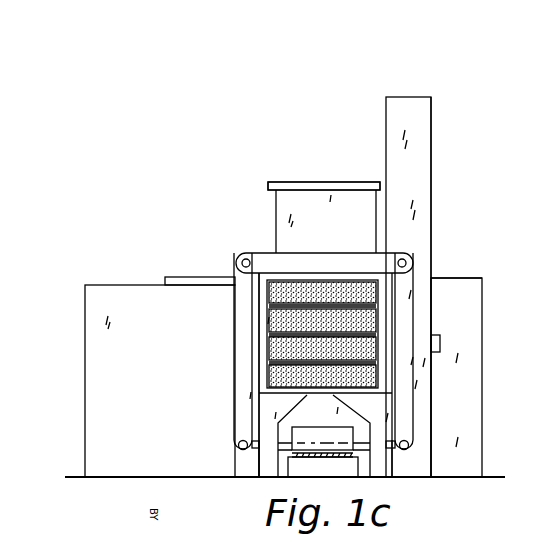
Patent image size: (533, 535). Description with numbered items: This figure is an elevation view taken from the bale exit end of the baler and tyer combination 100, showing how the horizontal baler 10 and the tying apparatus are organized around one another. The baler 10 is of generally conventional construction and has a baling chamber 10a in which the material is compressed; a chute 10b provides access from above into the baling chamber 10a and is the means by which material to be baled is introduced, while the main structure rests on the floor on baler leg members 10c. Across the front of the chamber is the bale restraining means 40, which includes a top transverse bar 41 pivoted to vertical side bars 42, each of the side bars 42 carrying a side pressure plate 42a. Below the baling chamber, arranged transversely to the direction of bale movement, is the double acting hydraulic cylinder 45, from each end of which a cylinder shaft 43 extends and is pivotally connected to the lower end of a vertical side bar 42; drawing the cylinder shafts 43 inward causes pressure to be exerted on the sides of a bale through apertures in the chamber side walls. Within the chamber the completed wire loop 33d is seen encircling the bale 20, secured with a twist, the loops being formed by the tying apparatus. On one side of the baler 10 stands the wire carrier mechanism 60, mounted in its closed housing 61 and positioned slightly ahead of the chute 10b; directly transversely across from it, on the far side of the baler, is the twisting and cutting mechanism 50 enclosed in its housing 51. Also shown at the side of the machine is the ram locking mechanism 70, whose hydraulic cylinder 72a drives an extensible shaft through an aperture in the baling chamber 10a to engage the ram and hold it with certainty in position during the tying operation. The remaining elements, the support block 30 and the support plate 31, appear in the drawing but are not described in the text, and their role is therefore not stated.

The baler and tyer combination 100 is at (147, 204).
The horizontal baler 10 is at (311, 182).
The baling chamber 10a is at (333, 397).
The chute 10b is at (273, 182).
The baler leg members 10c is at (262, 462).
The bale 20 is at (332, 280).
The support block 30 is at (170, 276).
The support plate 31 is at (206, 276).
The wire loop 33d is at (270, 296).
The bale restraining means 40 is at (240, 250).
The top transverse bar 41 is at (312, 264).
The vertical side bars 42 is at (237, 385).
The side pressure plate 42a is at (262, 345).
The cylinder shafts 43 is at (234, 452).
The hydraulic cylinder 45 is at (332, 449).
The twisting and cutting mechanism 50 is at (395, 96).
The housing 51 is at (424, 156).
The wire carrier mechanism 60 is at (102, 282).
The closed housing 61 is at (100, 335).
The ram locking mechanism 70 is at (437, 336).
The hydraulic cylinder 72a is at (441, 346).